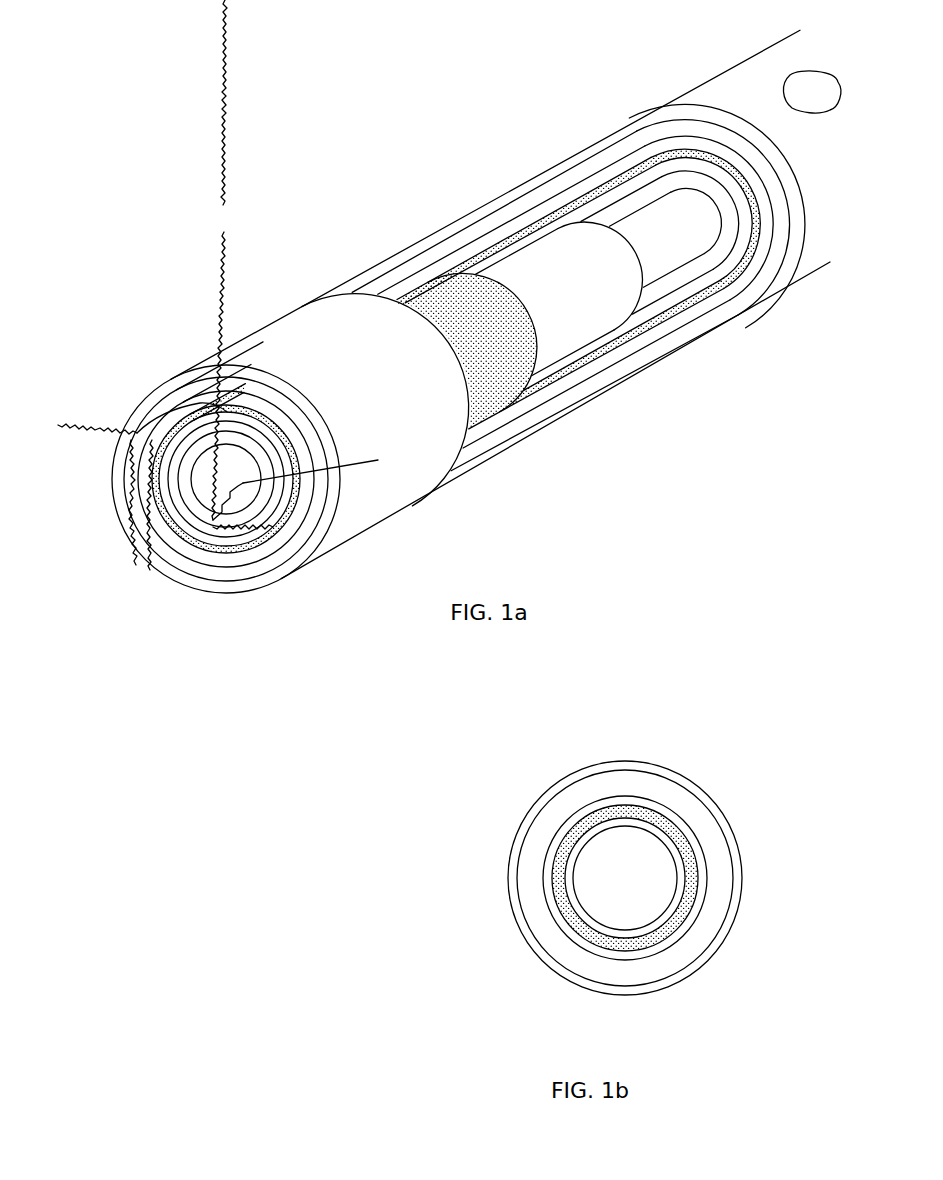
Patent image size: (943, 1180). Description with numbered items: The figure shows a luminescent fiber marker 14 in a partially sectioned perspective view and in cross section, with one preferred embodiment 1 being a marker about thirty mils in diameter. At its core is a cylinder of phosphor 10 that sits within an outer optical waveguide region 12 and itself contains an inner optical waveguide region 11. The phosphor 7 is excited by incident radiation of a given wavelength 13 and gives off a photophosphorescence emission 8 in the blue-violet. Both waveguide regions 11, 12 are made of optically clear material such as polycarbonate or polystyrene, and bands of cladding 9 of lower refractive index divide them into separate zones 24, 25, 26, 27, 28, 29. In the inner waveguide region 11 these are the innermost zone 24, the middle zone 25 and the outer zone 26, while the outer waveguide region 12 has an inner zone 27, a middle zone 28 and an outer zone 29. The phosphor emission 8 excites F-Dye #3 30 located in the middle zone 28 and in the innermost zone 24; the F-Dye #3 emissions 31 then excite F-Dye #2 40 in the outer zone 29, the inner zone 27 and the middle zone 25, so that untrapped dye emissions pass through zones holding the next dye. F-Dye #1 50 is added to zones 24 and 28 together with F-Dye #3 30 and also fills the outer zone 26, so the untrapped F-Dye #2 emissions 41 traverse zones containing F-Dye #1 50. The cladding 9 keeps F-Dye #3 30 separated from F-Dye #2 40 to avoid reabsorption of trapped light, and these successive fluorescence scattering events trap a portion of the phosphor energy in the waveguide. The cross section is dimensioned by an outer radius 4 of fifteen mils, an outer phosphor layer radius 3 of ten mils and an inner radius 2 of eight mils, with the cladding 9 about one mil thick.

In FIG. 1b, the preferred embodiment 1 is at (480, 915).
In FIG. 1a, the inner radius 2 is at (688, 223).
In FIG. 1b, the inner radius 2 is at (625, 878).
In FIG. 1a, the outer phosphor layer radius 3 is at (688, 223).
In FIG. 1b, the outer phosphor layer radius 3 is at (690, 897).
In FIG. 1a, the outer radius 4 is at (688, 223).
In FIG. 1b, the outer radius 4 is at (680, 780).
In FIG. 1a, the phosphor 7 is at (229, 412).
In FIG. 1a, the photophosphorescence emission radiation wavelength 8 is at (215, 410).
In FIG. 1a, the cladding layers 9 is at (643, 289).
In FIG. 1b, the cladding layers 9 is at (573, 855).
In FIG. 1a, the cylinder of phosphor 10 is at (439, 310).
In FIG. 1b, the cylinder of phosphor 10 is at (615, 942).
In FIG. 1a, the inner optical waveguide region 11 is at (641, 227).
In FIG. 1b, the inner optical waveguide region 11 is at (588, 860).
In FIG. 1a, the outer optical waveguide region 12 is at (604, 184).
In FIG. 1b, the outer optical waveguide region 12 is at (570, 952).
In FIG. 1a, the incident radiation wavelength 13 is at (223, 260).
In FIG. 1a, the luminescent fiber marker 14 is at (811, 92).
In FIG. 1a, the innermost zone 24 is at (660, 262).
In FIG. 1a, the middle zone of inner waveguide 25 is at (667, 284).
In FIG. 1a, the outer zone of inner waveguide 26 is at (665, 301).
In FIG. 1a, the inner zone of outer waveguide 27 is at (657, 325).
In FIG. 1a, the middle zone of outer waveguide 28 is at (663, 352).
In FIG. 1a, the outer zone of outer waveguide 29 is at (650, 373).
In FIG. 1a, the F-Dye #3 30 is at (196, 400).
In FIG. 1a, the F-Dye #3 emissions 31 is at (152, 447).
In FIG. 1a, the F-Dye #2 40 is at (232, 562).
In FIG. 1a, the F-Dye #2 untrapped emissions 41 is at (130, 445).
In FIG. 1a, the F-Dye #1 50 is at (215, 530).